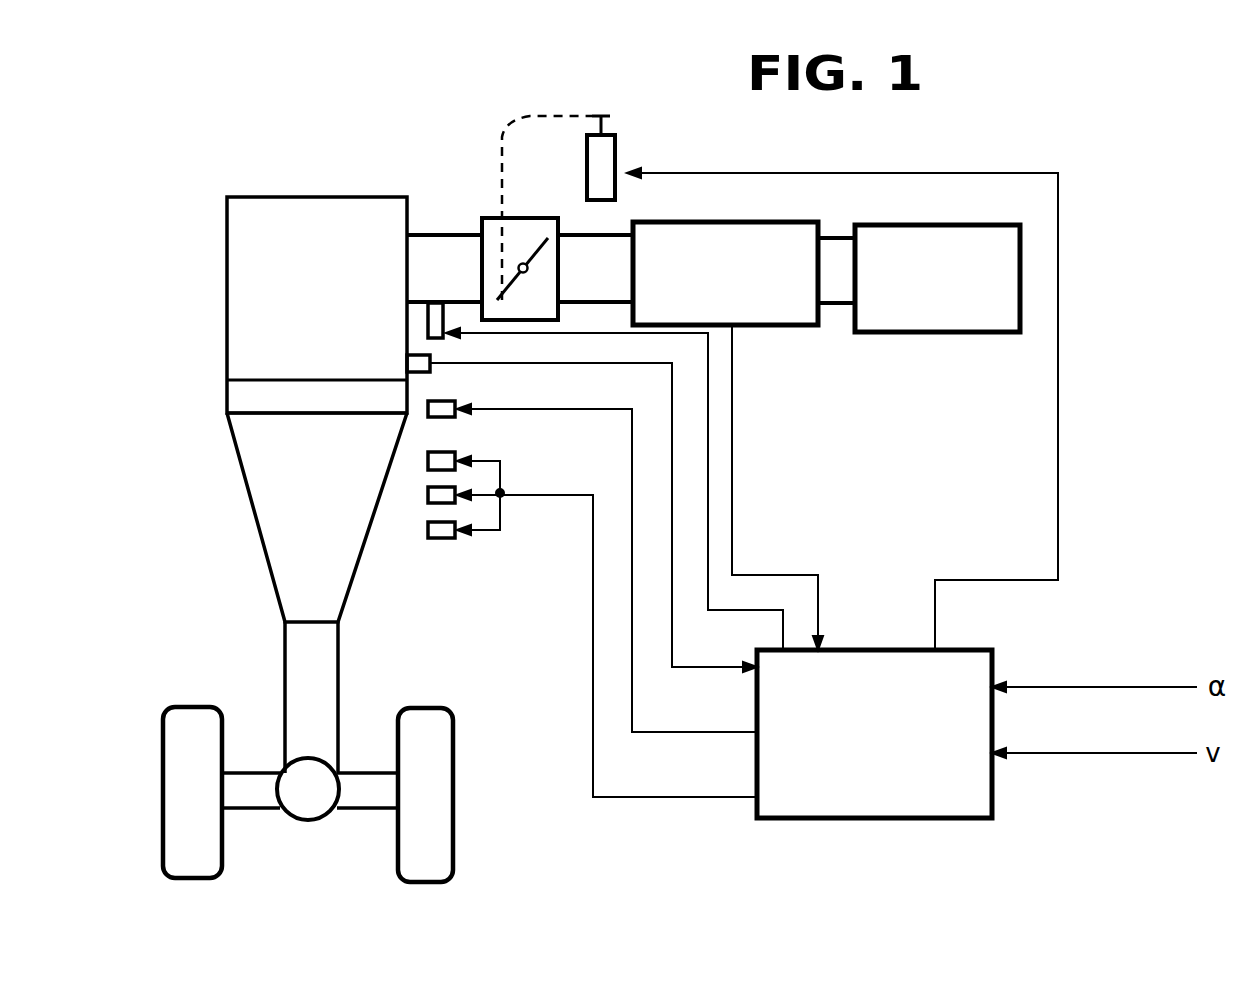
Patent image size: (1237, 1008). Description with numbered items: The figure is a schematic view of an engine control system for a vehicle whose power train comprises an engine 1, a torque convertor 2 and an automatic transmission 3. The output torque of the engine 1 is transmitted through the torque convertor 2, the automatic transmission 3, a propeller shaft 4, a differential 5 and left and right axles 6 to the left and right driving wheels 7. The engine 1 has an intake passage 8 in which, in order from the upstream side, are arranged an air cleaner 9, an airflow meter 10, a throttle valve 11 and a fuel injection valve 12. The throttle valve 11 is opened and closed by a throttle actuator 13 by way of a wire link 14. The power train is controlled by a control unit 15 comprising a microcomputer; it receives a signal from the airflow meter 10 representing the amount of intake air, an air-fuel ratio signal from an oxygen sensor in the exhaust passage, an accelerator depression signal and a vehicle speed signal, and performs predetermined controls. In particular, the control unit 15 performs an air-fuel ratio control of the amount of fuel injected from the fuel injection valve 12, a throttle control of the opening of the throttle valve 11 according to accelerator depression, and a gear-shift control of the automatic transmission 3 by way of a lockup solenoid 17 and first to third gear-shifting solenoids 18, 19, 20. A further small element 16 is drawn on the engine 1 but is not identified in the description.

The engine 1 is at (245, 313).
The torque convertor 2 is at (237, 393).
The automatic transmission 3 is at (263, 483).
The propeller shaft 4 is at (298, 660).
The differential 5 is at (310, 806).
The axles 6 is at (253, 797).
The driving wheels 7 is at (183, 845).
The intake passage 8 is at (578, 248).
The air cleaner 9 is at (875, 333).
The airflow meter 10 is at (700, 222).
The throttle valve 11 is at (528, 247).
The fuel injection valve 12 is at (427, 323).
The throttle actuator 13 is at (603, 152).
The wire link 14 is at (502, 137).
The control unit 15 is at (932, 820).
The fuel injector 16 is at (408, 363).
The lockup solenoid 17 is at (443, 417).
The first gear-shifting solenoid 18 is at (428, 462).
The second gear-shifting solenoid 19 is at (425, 497).
The third gear-shifting solenoid 20 is at (443, 538).